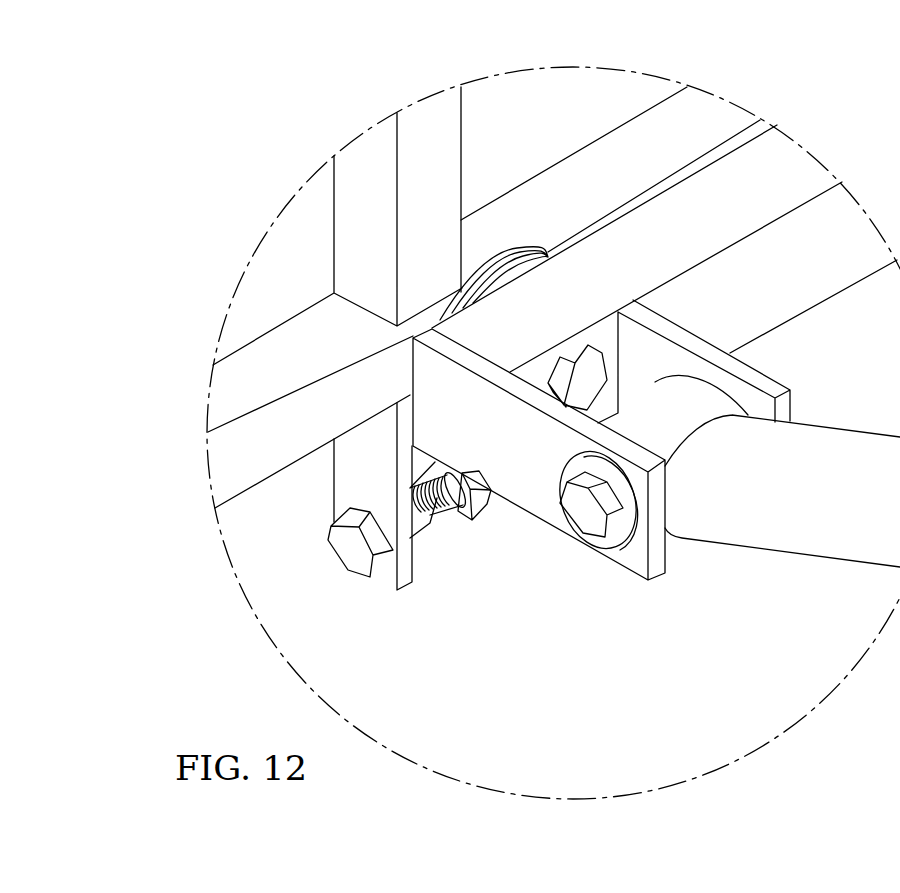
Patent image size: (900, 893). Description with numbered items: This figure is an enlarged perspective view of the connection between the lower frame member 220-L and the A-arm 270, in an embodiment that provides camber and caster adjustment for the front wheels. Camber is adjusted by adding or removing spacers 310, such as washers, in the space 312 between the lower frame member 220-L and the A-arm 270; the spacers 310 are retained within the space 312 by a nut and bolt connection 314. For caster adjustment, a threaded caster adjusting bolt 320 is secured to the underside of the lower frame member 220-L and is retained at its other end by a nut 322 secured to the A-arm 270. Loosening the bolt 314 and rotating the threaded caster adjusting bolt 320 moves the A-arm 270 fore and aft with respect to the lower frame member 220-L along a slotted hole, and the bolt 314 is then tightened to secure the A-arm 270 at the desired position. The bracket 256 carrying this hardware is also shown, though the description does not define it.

The lower frame member 220-L is at (657, 140).
The spacers 310 is at (495, 290).
The space 312 is at (598, 221).
The nut and bolt connection 314 is at (593, 373).
The bracket 256 is at (535, 505).
The A-arm 270 is at (780, 537).
The threaded caster adjusting bolt 320 is at (360, 569).
The nut 322 is at (458, 513).